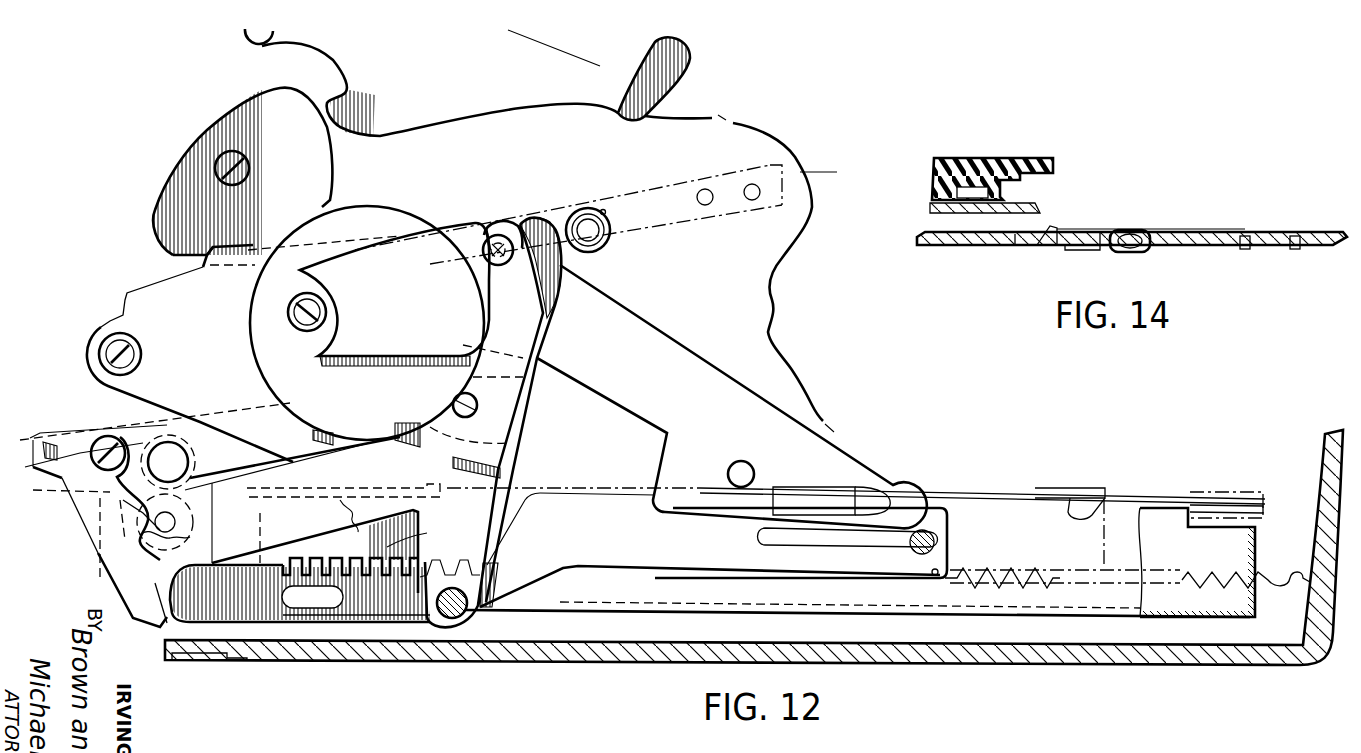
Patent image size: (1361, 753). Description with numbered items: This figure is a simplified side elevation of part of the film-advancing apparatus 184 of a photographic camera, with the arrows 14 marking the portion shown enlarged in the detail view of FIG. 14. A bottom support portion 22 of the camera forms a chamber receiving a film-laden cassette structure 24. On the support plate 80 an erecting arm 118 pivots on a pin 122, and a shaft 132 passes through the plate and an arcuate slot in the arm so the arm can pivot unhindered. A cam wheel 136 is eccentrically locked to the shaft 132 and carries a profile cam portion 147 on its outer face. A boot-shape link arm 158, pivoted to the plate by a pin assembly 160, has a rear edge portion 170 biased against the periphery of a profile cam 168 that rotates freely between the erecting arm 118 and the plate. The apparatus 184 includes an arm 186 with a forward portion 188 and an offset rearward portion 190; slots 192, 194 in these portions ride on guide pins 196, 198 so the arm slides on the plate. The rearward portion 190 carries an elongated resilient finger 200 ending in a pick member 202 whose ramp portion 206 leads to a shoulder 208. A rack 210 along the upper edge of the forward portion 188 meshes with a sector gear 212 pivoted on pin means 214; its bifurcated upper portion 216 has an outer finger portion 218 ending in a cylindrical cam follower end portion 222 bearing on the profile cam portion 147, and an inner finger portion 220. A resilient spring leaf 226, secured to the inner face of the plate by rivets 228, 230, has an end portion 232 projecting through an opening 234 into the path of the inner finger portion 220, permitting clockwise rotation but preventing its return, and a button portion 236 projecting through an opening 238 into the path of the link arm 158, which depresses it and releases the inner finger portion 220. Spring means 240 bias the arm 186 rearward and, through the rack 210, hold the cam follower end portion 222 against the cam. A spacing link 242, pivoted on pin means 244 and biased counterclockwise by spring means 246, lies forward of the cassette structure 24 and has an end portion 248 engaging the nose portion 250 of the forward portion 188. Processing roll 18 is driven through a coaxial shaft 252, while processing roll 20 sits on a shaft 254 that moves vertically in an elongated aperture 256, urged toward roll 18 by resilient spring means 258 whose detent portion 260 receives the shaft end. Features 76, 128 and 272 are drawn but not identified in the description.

In FIG. 12, the section line 14- 14 is at (453, 252).
In FIG. 12, the processing roll 18 is at (155, 418).
In FIG. 12, the processing roll 20 is at (200, 538).
In FIG. 12, the bottom support portion 22 is at (905, 666).
In FIG. 12, the film-laden cassette structure 24 is at (652, 614).
In FIG. 12, the pivot hole 76 is at (740, 462).
In FIG. 12, the support plate 80 is at (713, 298).
In FIG. 14, the support plate 80 is at (1282, 232).
In FIG. 12, the erecting arm 118 is at (145, 298).
In FIG. 12, the pin 122 is at (110, 343).
In FIG. 12, the lever lug 128 is at (780, 472).
In FIG. 12, the shaft 132 is at (290, 308).
In FIG. 12, the cam wheel 136 is at (358, 399).
In FIG. 14, the cam wheel 136 is at (922, 180).
In FIG. 12, the profile cam portion 147 is at (388, 262).
In FIG. 14, the profile cam portion 147 is at (1010, 158).
In FIG. 12, the boot-shape link arm 158 is at (443, 98).
In FIG. 14, the boot-shape link arm 158 is at (1190, 232).
In FIG. 12, the pin assembly 160 is at (240, 36).
In FIG. 12, the profile cam 168 is at (243, 120).
In FIG. 12, the rear edge portion 170 is at (339, 128).
In FIG. 12, the film-advancing apparatus 184 is at (563, 665).
In FIG. 12, the arm 186 is at (418, 630).
In FIG. 12, the forward portion 188 is at (258, 628).
In FIG. 12, the rearward portion 190 is at (760, 568).
In FIG. 12, the slot 192 is at (325, 612).
In FIG. 12, the slot 194 is at (758, 533).
In FIG. 12, the guide pin 196 is at (450, 618).
In FIG. 12, the guide pin 198 is at (918, 548).
In FIG. 12, the resilient finger 200 is at (960, 491).
In FIG. 12, the pick member 202 is at (1110, 497).
In FIG. 12, the ramp portion 206 is at (1127, 544).
In FIG. 12, the shoulder 208 is at (1075, 510).
In FIG. 12, the rack 210 is at (375, 572).
In FIG. 12, the sector gear 212 is at (380, 532).
In FIG. 12, the pin means 214 is at (473, 409).
In FIG. 12, the bifurcated upper portion 216 is at (510, 453).
In FIG. 12, the outer finger portion 218 is at (520, 368).
In FIG. 12, the inner finger portion 220 is at (560, 262).
In FIG. 14, the inner finger portion 220 is at (1072, 248).
In FIG. 12, the cam follower end portion 222 is at (452, 341).
In FIG. 14, the cam follower end portion 222 is at (1045, 157).
In FIG. 12, the resilient spring leaf 226 is at (637, 233).
In FIG. 14, the resilient spring leaf 226 is at (1210, 250).
In FIG. 12, the rivet 228 is at (705, 189).
In FIG. 14, the rivet 228 is at (1245, 250).
In FIG. 12, the rivet 230 is at (752, 184).
In FIG. 14, the rivet 230 is at (1298, 250).
In FIG. 12, the end portion 232 is at (508, 230).
In FIG. 14, the end portion 232 is at (1048, 232).
In FIG. 12, the opening 234 is at (489, 236).
In FIG. 14, the opening 234 is at (1018, 247).
In FIG. 12, the button portion 236 is at (588, 220).
In FIG. 14, the button portion 236 is at (1127, 232).
In FIG. 12, the opening 238 is at (603, 213).
In FIG. 14, the opening 238 is at (1150, 250).
In FIG. 12, the spring means 240 is at (1228, 588).
In FIG. 12, the spacing link 242 is at (92, 495).
In FIG. 12, the pin means 244 is at (96, 438).
In FIG. 12, the spring means 246 is at (62, 438).
In FIG. 12, the end portion 248 is at (205, 628).
In FIG. 12, the nose portion 250 is at (224, 632).
In FIG. 12, the shaft 252 is at (180, 450).
In FIG. 12, the shaft 254 is at (248, 524).
In FIG. 12, the elongated aperture 256 is at (292, 463).
In FIG. 12, the resilient spring means 258 is at (95, 557).
In FIG. 12, the detent portion 260 is at (105, 566).
In FIG. 12, the screw 272 is at (245, 182).